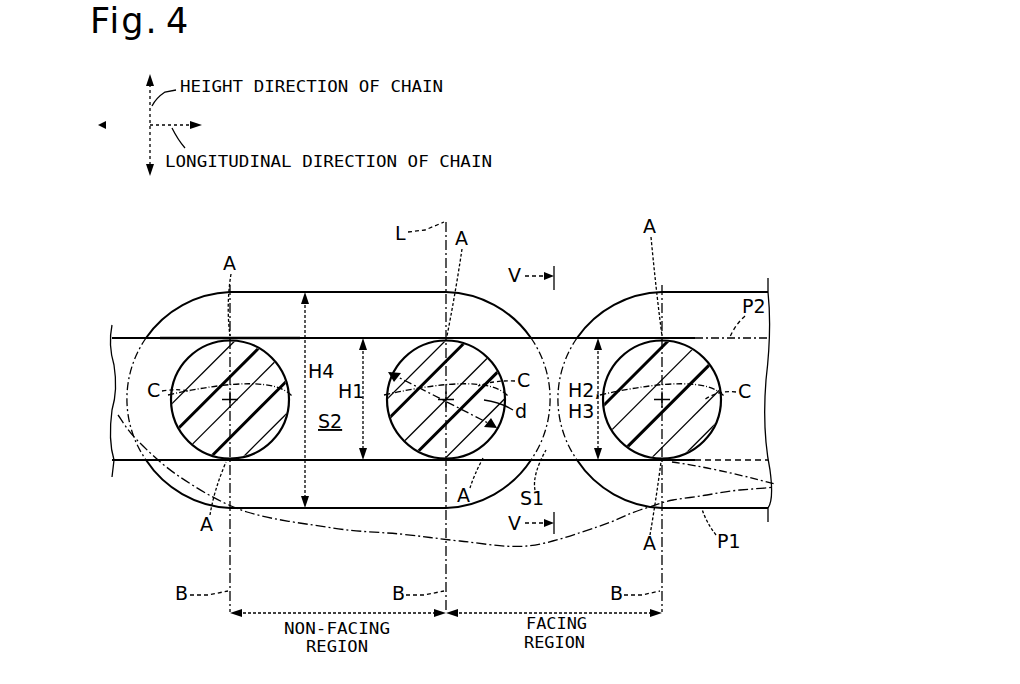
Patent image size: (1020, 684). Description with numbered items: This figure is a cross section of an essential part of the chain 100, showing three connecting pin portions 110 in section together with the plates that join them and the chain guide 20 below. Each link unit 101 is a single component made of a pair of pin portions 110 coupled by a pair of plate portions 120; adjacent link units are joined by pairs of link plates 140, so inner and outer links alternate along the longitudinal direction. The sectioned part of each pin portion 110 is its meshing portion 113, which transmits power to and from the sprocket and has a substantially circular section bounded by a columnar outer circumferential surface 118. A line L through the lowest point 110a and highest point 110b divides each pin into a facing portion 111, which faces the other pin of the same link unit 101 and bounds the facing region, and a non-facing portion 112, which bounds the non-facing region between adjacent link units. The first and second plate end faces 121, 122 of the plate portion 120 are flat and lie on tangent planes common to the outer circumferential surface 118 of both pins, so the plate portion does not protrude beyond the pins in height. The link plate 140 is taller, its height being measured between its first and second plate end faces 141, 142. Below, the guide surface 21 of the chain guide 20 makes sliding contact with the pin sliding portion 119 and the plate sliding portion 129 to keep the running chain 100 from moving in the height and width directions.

The chain 100 is at (515, 216).
The link unit 101 is at (575, 480).
The connecting pin portion 110 is at (173, 442).
The lowest point 110a is at (442, 462).
The highest point 110b is at (444, 336).
The facing portion 111 is at (512, 337).
The non-facing portion 112 is at (275, 352).
The meshing portion 113 is at (220, 345).
The outer circumferential surface 118 is at (185, 336).
The pin sliding portion 119 is at (673, 510).
The plate portion 120 is at (160, 336).
The first plate end face 121 is at (598, 464).
The second plate end face 122 is at (568, 336).
The plate sliding portion 129 is at (495, 500).
The link plate 140 is at (724, 510).
The first plate end face 141 is at (282, 510).
The second plate end face 142 is at (275, 291).
The chain guide 20 is at (748, 470).
The guide surface 21 is at (322, 455).